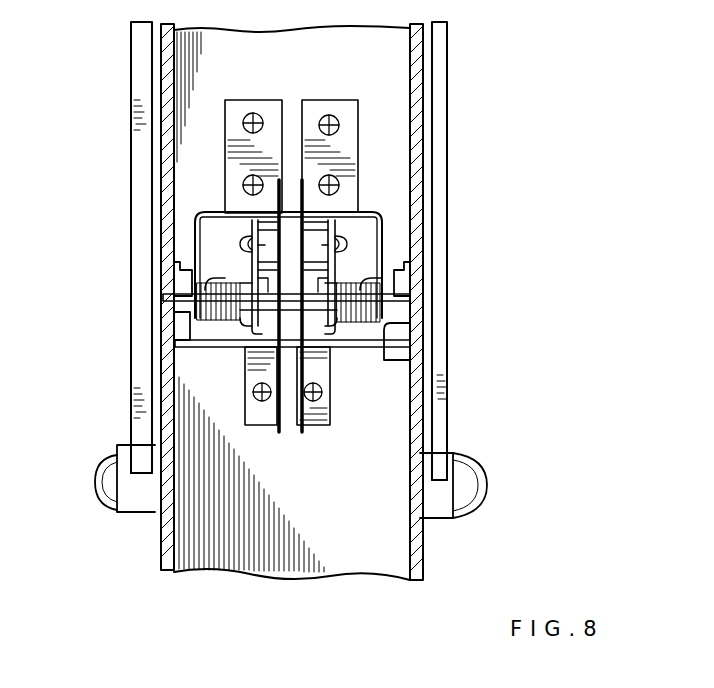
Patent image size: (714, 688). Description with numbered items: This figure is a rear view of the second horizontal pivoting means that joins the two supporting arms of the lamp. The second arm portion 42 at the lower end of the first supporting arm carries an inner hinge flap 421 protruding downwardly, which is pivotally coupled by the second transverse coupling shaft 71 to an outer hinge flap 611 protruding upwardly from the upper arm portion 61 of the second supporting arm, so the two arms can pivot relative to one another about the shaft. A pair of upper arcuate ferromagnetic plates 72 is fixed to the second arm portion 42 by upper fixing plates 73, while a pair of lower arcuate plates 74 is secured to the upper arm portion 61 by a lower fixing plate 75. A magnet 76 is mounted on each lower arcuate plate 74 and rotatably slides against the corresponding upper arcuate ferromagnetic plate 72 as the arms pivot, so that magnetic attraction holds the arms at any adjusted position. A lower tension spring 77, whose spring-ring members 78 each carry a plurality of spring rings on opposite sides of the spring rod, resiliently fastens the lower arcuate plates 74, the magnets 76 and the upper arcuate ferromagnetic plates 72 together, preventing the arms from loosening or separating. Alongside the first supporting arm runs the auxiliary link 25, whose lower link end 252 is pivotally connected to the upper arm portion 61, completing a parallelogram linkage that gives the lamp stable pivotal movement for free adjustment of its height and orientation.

The second arm portion 42 is at (393, 66).
The upper fixing plate 73 is at (348, 140).
The magnet 76 is at (310, 243).
The upper arcuate ferromagnetic plate 72 is at (296, 270).
The spring-ring member 78 is at (382, 278).
The auxiliary link 25 is at (438, 327).
The outer hinge flap 611 is at (155, 327).
The inner hinge flap 421 is at (192, 270).
The lower arcuate plate 74 is at (335, 372).
The lower fixing plate 75 is at (430, 467).
The lower link end 252 is at (472, 508).
The lower tension spring 77 is at (197, 212).
The second transverse coupling shaft 71 is at (170, 300).
The upper arm portion 61 is at (230, 503).